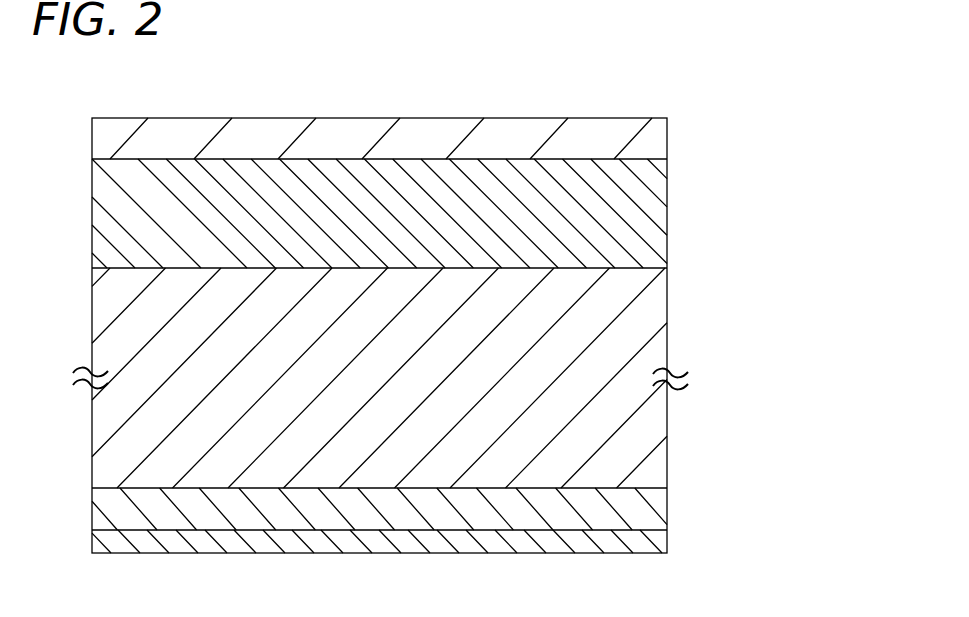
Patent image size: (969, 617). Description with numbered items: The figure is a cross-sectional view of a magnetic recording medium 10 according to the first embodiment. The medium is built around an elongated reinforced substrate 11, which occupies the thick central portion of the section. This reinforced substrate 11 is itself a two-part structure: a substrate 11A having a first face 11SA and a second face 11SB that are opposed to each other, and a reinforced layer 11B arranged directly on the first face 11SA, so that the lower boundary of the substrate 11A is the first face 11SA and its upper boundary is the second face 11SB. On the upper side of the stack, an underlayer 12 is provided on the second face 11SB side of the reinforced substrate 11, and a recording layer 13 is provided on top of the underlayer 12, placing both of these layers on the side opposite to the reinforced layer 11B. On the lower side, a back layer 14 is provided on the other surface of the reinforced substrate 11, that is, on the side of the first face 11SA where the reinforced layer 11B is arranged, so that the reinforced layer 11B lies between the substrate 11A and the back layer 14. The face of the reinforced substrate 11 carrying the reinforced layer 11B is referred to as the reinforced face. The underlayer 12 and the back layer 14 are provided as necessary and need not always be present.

The magnetic recording medium 10 is at (601, 48).
The reinforced substrate 11 is at (772, 283).
The substrate 11A is at (657, 312).
The reinforced layer 11B is at (657, 505).
The first face 11SA is at (378, 500).
The second face 11SB is at (365, 258).
The underlayer 12 is at (657, 218).
The recording layer 13 is at (657, 144).
The back layer 14 is at (658, 544).